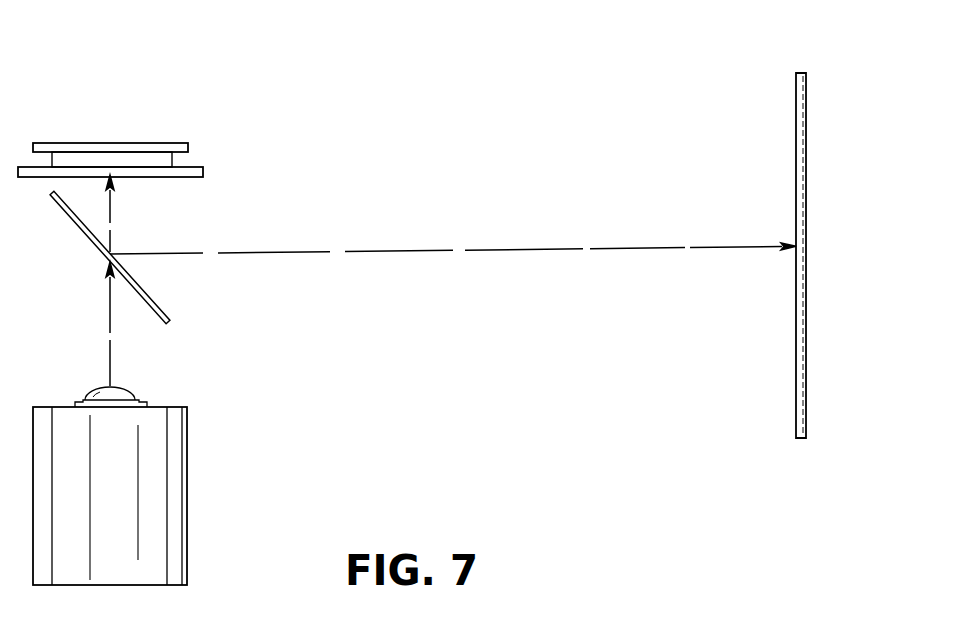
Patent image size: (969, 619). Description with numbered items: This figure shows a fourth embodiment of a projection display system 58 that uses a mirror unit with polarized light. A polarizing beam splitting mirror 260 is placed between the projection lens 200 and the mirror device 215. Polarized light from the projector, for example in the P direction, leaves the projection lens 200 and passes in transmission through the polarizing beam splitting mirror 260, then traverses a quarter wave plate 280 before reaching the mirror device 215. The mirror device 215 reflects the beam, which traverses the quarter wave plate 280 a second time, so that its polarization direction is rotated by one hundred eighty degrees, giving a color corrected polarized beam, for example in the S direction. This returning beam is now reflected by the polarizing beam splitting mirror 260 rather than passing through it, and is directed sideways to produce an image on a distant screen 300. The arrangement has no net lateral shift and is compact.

The optical projection system 58 is at (463, 118).
The projection lens 200 is at (173, 500).
The mirror device 215 is at (182, 142).
The polarizing beam splitting mirror 260 is at (160, 305).
The quarter wave plate 280 is at (203, 170).
The screen 300 is at (796, 400).